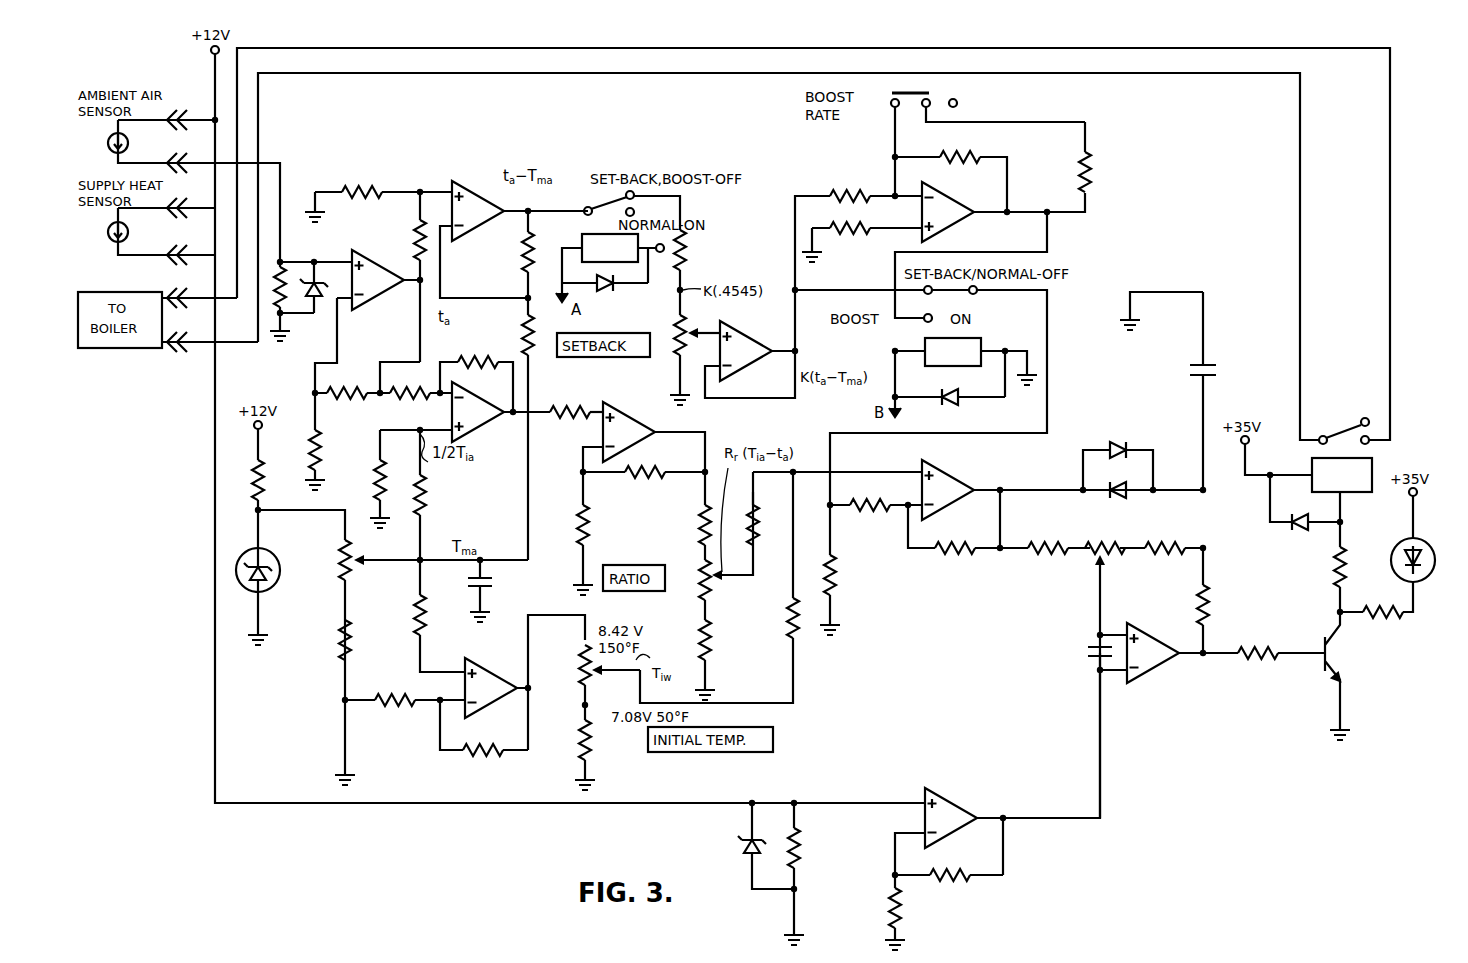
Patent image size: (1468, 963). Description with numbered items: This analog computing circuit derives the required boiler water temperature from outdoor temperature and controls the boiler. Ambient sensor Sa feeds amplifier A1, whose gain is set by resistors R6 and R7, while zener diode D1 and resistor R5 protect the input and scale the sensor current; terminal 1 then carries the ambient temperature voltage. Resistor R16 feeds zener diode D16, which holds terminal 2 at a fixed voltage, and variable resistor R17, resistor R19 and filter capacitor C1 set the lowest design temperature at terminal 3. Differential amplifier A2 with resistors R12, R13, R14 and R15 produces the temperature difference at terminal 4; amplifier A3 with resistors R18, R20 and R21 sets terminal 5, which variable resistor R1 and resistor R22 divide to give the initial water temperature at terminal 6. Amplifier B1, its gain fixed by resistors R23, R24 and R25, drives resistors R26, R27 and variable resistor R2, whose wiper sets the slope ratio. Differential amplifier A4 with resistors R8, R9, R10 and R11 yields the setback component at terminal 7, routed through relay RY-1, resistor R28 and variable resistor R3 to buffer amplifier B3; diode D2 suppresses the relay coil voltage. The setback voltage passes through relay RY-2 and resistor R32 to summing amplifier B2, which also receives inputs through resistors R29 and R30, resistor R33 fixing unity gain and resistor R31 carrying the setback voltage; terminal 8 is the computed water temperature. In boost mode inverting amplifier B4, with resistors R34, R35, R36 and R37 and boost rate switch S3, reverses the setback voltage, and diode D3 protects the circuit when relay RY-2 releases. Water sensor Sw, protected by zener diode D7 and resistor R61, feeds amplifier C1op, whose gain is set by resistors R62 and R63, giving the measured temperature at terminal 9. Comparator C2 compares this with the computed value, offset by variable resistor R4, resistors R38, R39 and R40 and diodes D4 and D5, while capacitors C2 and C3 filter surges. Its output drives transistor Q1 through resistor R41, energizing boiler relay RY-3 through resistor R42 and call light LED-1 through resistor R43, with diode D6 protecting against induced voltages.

The terminal 1 is at (433, 320).
The terminal 2 is at (271, 525).
The terminal 3 is at (427, 571).
The terminal 4 is at (517, 423).
The terminal 5 is at (534, 689).
The terminal 6 is at (577, 709).
The terminal 7 is at (527, 200).
The terminal 8 is at (999, 478).
The terminal 9 is at (1002, 806).
The ambient temperature sensor Sa is at (128, 144).
The water temperature sensor Sw is at (129, 232).
The amplifier A1 is at (378, 280).
The differential amplifier A2 is at (478, 412).
The amplifier A3 is at (491, 688).
The differential amplifier A4 is at (478, 211).
The amplifier B1 is at (629, 432).
The summing amplifier B2 is at (948, 490).
The buffer amplifier B3 is at (746, 351).
The inverting amplifier B4 is at (948, 212).
The amplifier C1op is at (951, 818).
The comparator amplifier C2 is at (1117, 653).
The capacitor C1 is at (489, 586).
The capacitor C3 is at (1188, 391).
The zener diode D1 is at (309, 287).
The diode D2 is at (605, 291).
The diode D3 is at (950, 407).
The diode D4 is at (1118, 457).
The diode D5 is at (1116, 500).
The diode D6 is at (1305, 510).
The zener diode D7 is at (750, 846).
The reference diode D16 is at (275, 591).
The NPN transistor Q1 is at (1348, 671).
The heat indicator light LED-1 is at (1428, 546).
The boost rate switch S3 is at (994, 102).
The relay switch RY-1 is at (610, 248).
The relay RY-2 is at (953, 352).
The boiler control relay RY-3 is at (1342, 475).
The variable resistor R1 is at (599, 682).
The variable resistor R2 is at (711, 556).
The variable resistor R3 is at (669, 342).
The variable resistor R4 is at (1105, 598).
The resistor R5 is at (277, 300).
The resistor R6 is at (301, 436).
The resistor R7 is at (347, 402).
The resistor R8 is at (383, 182).
The resistor R9 is at (409, 277).
The resistor R10 is at (511, 254).
The resistor R11 is at (513, 429).
The resistor R12 is at (476, 384).
The resistor R13 is at (416, 402).
The resistor R14 is at (364, 474).
The resistor R15 is at (439, 495).
The resistor R16 is at (275, 488).
The variable resistor R17 is at (419, 619).
The resistor R18 is at (424, 616).
The resistor R19 is at (328, 640).
The resistor R20 is at (392, 710).
The resistor R21 is at (484, 738).
The resistor R22 is at (603, 750).
The resistor R23 is at (576, 402).
The resistor R24 is at (601, 528).
The resistor R25 is at (644, 481).
The resistor R26 is at (687, 516).
The resistor R27 is at (723, 655).
The resistor R28 is at (697, 247).
The resistor R29 is at (768, 508).
The resistor R30 is at (719, 587).
The resistor R31 is at (850, 565).
The resistor R32 is at (876, 513).
The resistor R33 is at (954, 538).
The resistor R34 is at (858, 187).
The resistor R35 is at (867, 236).
The resistor R36 is at (951, 181).
The resistor R37 is at (1102, 157).
The resistor R38 is at (1045, 557).
The resistor R39 is at (1161, 557).
The resistor R40 is at (1183, 600).
The resistor R41 is at (1264, 643).
The current limiting resistor R42 is at (1322, 567).
The current limiting resistor R43 is at (1376, 610).
The resistor R61 is at (811, 869).
The resistor R62 is at (874, 907).
The resistor R63 is at (949, 884).